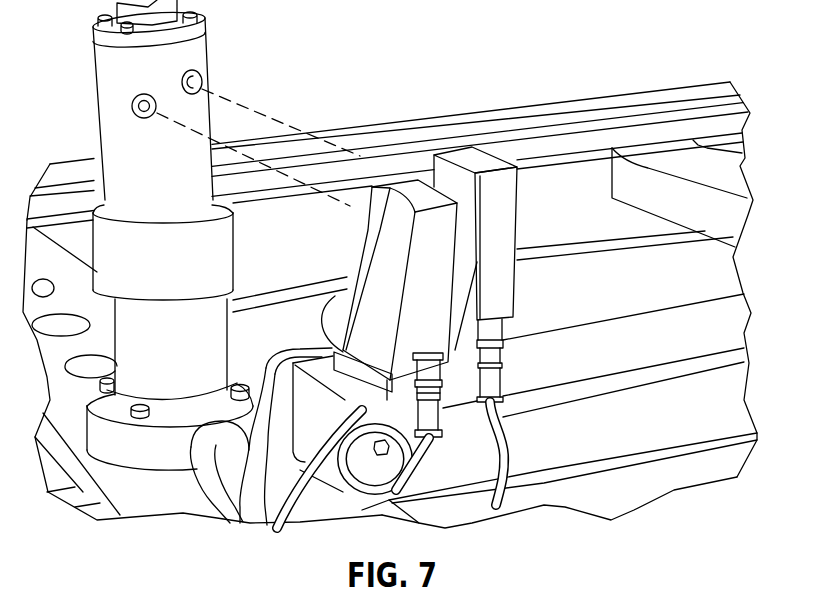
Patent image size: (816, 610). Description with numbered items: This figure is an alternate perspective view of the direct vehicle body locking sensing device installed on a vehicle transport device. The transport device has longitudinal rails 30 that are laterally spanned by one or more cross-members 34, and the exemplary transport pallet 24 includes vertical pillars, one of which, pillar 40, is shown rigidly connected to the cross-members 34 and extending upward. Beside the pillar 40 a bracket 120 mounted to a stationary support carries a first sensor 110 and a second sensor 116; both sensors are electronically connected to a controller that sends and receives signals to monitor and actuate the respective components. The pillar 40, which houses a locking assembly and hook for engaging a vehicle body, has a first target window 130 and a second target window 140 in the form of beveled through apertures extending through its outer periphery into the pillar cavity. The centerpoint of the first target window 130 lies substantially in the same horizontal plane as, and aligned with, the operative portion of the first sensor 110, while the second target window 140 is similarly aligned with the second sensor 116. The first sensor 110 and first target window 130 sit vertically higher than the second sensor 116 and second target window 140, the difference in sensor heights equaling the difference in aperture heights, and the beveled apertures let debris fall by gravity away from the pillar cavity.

The transport pallet 24 is at (647, 402).
The longitudinal rails 30 is at (588, 451).
The cross-members 34 is at (180, 501).
The pillar 40 is at (182, 358).
The first sensor 110 is at (464, 153).
The second sensor 116 is at (387, 193).
The bracket 120 is at (329, 424).
The first target window 130 is at (203, 100).
The second target window 140 is at (124, 106).